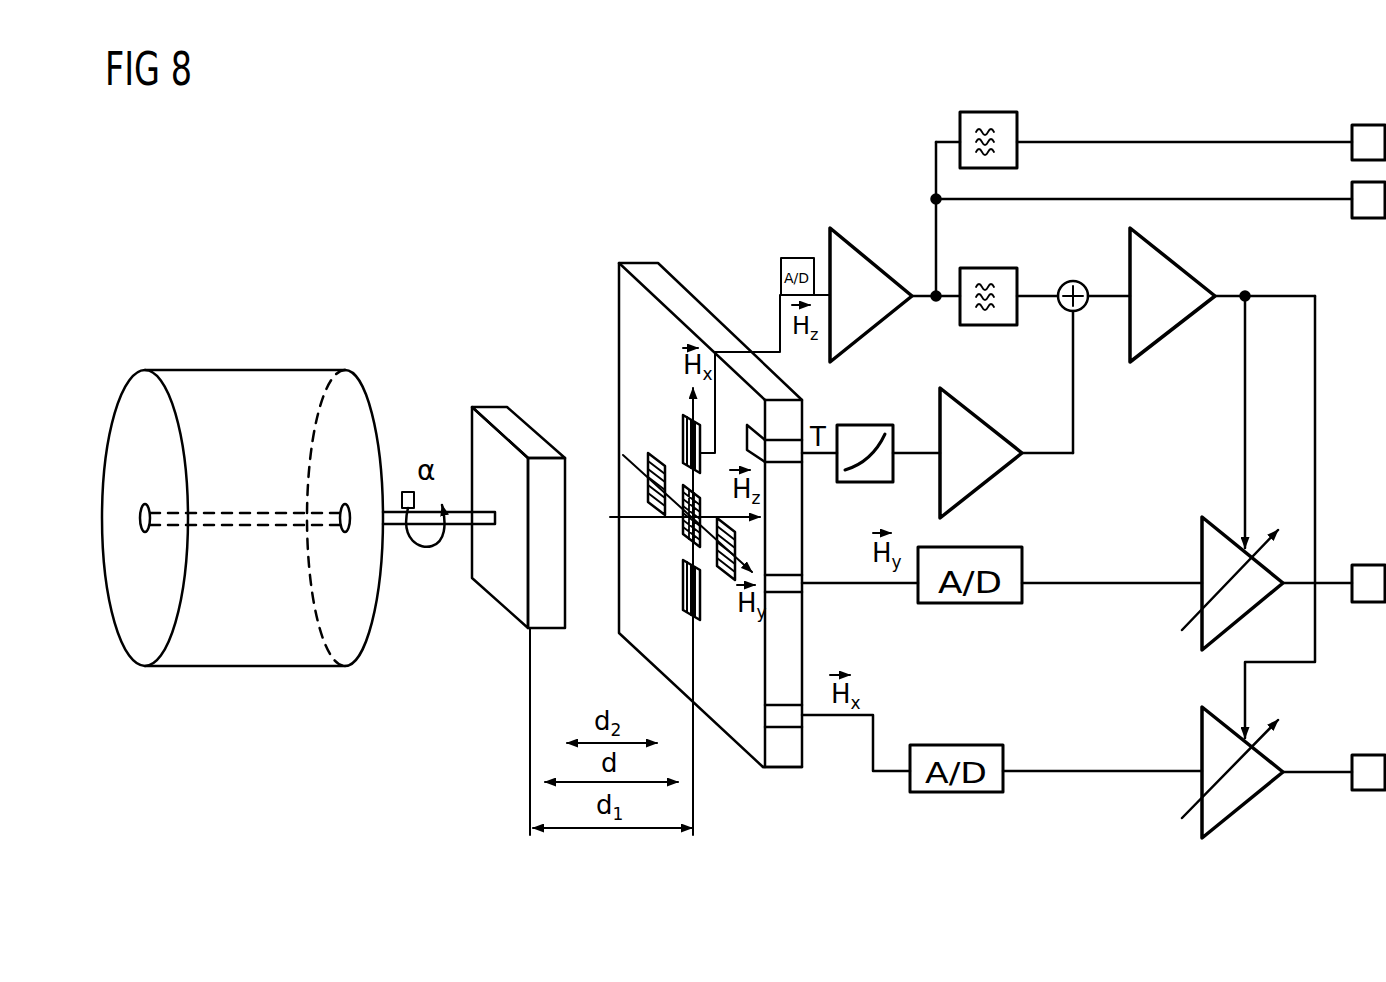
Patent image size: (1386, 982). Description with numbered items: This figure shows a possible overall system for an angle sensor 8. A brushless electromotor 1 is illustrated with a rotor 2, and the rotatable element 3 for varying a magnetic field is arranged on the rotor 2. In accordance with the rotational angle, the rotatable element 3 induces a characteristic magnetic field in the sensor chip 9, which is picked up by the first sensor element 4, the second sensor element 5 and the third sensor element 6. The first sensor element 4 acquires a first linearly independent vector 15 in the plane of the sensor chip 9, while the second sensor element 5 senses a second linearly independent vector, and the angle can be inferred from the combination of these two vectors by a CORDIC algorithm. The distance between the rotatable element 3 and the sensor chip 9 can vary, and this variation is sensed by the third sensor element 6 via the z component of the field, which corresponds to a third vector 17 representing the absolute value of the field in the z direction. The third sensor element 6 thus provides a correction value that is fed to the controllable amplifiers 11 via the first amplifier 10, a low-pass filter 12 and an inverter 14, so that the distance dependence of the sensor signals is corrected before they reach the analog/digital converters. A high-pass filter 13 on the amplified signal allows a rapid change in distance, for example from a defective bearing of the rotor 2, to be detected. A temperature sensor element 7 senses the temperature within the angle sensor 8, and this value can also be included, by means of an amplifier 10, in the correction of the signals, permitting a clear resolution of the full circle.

The brushless electromotor 1 is at (248, 370).
The rotor 2 is at (238, 513).
The rotatable element 3 is at (517, 427).
The first sensor element 4 is at (658, 452).
The second sensor element 5 is at (702, 616).
The third sensor element 6 is at (685, 545).
The temperature sensor element 7 is at (787, 460).
The angle sensor 8 is at (589, 325).
The sensor chip 9 is at (787, 769).
The first amplifier 10 is at (873, 260).
The controllable amplifiers 11 is at (1202, 548).
The low-pass filter 12 is at (990, 326).
The high-pass filter 13 is at (985, 112).
The analog inverter 14 is at (1130, 255).
The first linearly independent vector 15 is at (628, 456).
The third vector 17 is at (613, 520).